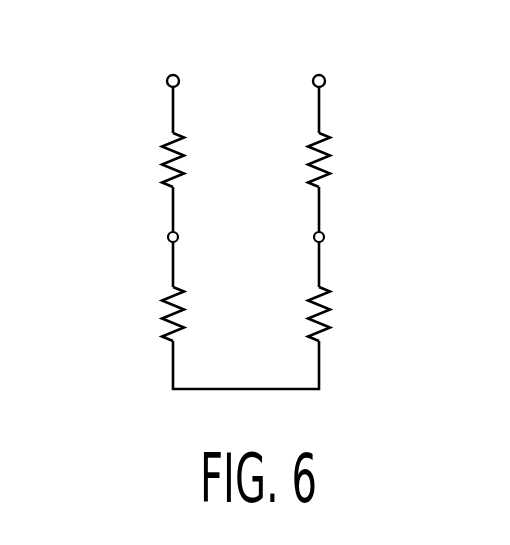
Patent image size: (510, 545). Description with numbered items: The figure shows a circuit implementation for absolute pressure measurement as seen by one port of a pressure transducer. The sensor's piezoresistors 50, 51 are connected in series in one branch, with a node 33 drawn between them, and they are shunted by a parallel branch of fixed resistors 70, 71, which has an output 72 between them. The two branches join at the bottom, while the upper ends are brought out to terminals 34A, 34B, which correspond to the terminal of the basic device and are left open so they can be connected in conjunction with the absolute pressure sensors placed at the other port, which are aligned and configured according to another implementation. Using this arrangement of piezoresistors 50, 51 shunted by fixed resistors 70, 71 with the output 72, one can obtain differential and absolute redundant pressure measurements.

The terminal 34A is at (172, 63).
The terminal 34B is at (321, 63).
The piezoresistor 50 is at (164, 180).
The piezoresistor 51 is at (164, 308).
The center tap node 33 is at (167, 236).
The fixed resistor 70 is at (328, 173).
The fixed resistor 71 is at (328, 316).
The output 72 is at (325, 236).